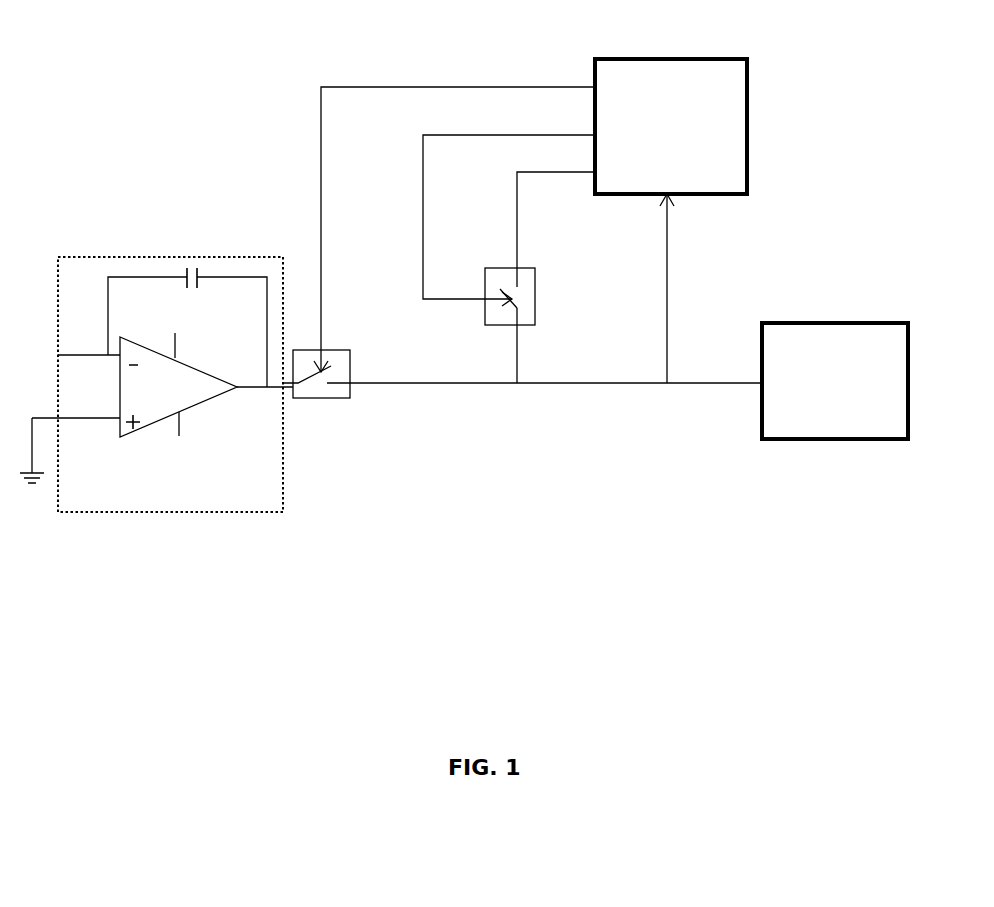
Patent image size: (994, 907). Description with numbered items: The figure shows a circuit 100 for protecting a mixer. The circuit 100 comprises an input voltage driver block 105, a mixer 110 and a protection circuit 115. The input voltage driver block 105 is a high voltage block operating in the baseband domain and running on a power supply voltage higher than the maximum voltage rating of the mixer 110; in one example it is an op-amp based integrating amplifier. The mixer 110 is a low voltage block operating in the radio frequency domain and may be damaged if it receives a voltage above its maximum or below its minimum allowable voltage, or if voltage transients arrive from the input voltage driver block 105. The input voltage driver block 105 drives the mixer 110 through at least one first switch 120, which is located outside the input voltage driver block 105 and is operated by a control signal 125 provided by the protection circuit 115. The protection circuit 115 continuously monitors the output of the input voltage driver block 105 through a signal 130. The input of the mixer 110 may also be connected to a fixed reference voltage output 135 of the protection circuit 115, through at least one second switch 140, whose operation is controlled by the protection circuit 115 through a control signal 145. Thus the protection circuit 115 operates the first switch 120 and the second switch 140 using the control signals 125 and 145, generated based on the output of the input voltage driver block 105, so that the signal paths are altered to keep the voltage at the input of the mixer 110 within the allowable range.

The circuit 100 is at (197, 575).
The input voltage driver block 105 is at (183, 257).
The mixer 110 is at (838, 323).
The protection circuit 115 is at (640, 59).
The first switch 120 is at (317, 385).
The control signal 125 is at (454, 217).
The signal 130 is at (689, 288).
The fixed reference voltage output 135 is at (556, 266).
The second switch 140 is at (529, 296).
The control signal 145 is at (509, 209).